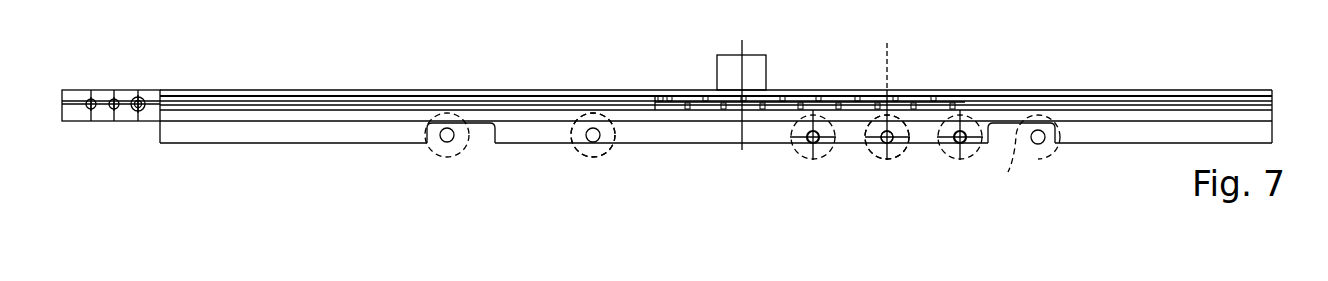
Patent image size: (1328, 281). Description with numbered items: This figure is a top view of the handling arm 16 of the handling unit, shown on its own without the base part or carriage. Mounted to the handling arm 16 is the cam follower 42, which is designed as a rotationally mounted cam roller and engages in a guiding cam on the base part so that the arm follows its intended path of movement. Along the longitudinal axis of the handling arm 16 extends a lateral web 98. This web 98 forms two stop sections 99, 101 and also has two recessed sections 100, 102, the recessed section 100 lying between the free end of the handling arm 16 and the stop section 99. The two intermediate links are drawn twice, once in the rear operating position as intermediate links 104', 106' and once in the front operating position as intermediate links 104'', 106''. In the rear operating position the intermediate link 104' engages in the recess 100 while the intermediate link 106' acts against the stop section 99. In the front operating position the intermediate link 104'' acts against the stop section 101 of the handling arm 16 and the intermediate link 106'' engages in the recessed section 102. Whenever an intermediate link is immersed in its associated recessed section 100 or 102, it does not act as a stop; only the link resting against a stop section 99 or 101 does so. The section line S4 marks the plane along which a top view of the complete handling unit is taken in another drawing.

The handling arm 16 is at (367, 112).
The cam follower 42 is at (760, 72).
The lateral web 98 is at (1137, 143).
The stop section 99 is at (620, 166).
The recessed section 100 is at (482, 133).
The stop section 101 is at (913, 182).
The recessed section 102 is at (1003, 150).
The intermediate link in rear operating position 104' is at (409, 165).
The intermediate link in front operating position 104'' is at (920, 169).
The intermediate link in rear operating position 106' is at (562, 159).
The intermediate link in front operating position 106'' is at (1056, 169).
The section line S4- S4 is at (988, 238).